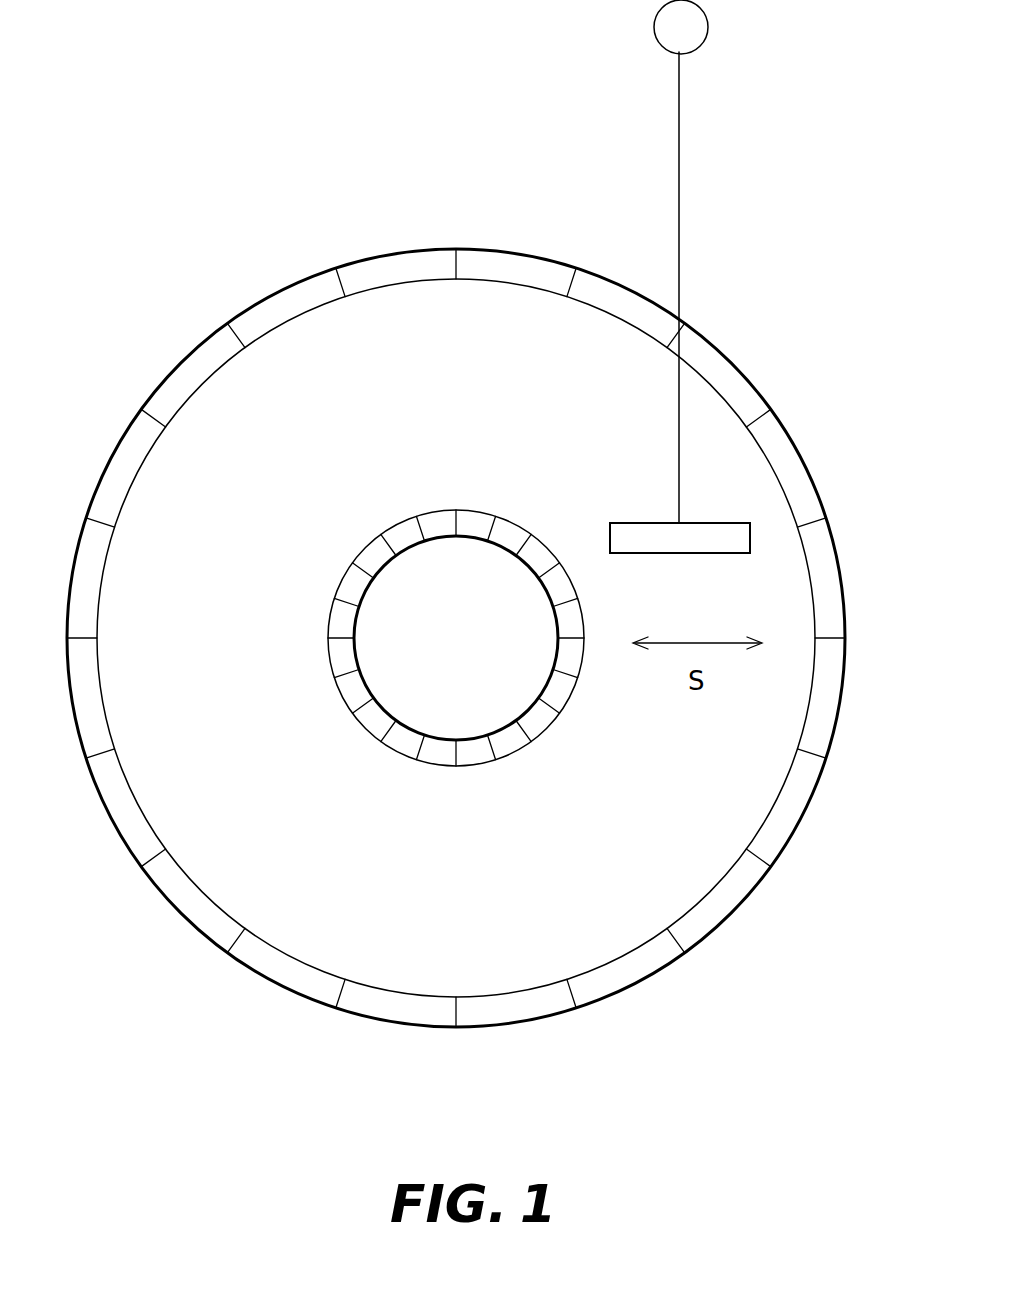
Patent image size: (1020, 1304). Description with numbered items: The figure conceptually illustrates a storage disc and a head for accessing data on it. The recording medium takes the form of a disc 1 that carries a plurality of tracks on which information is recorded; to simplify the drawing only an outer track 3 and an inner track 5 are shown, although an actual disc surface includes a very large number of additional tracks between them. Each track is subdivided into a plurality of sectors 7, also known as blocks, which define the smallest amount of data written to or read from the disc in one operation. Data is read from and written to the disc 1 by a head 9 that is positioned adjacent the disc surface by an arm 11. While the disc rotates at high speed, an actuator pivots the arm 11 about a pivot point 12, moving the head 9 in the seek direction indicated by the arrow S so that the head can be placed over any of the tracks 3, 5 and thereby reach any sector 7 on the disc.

The disc 1 is at (185, 920).
The outer track 3 is at (213, 330).
The inner track 5 is at (384, 748).
The sectors 7 is at (407, 515).
The head 9 is at (653, 523).
The arm 11 is at (682, 218).
The pivot point 12 is at (655, 28).